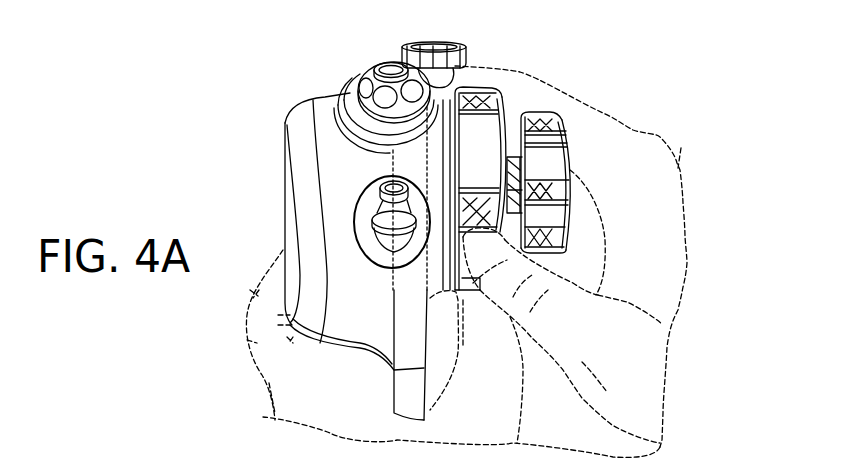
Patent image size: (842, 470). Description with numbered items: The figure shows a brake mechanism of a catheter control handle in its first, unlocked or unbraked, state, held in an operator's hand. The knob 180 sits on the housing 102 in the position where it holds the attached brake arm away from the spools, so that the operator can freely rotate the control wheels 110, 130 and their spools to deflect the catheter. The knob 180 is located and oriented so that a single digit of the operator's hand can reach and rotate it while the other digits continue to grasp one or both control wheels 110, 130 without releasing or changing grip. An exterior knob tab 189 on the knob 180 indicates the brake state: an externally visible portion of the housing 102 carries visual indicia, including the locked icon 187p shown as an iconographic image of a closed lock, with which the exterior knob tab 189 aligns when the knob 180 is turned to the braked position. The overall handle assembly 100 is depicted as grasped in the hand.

The hand-held device assembly 100 is at (422, 268).
The housing 102 is at (328, 138).
The control wheel 110 is at (548, 150).
The control wheel 130 is at (508, 115).
The knob 180 is at (363, 82).
The locked icon 187p is at (437, 120).
The exterior knob tab 189 is at (485, 152).